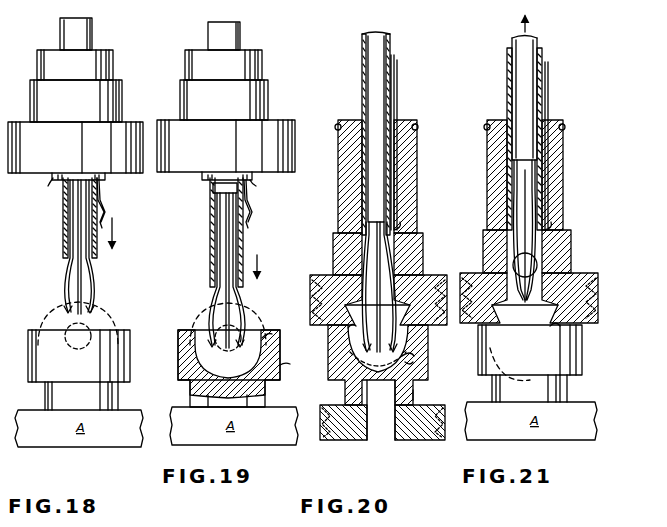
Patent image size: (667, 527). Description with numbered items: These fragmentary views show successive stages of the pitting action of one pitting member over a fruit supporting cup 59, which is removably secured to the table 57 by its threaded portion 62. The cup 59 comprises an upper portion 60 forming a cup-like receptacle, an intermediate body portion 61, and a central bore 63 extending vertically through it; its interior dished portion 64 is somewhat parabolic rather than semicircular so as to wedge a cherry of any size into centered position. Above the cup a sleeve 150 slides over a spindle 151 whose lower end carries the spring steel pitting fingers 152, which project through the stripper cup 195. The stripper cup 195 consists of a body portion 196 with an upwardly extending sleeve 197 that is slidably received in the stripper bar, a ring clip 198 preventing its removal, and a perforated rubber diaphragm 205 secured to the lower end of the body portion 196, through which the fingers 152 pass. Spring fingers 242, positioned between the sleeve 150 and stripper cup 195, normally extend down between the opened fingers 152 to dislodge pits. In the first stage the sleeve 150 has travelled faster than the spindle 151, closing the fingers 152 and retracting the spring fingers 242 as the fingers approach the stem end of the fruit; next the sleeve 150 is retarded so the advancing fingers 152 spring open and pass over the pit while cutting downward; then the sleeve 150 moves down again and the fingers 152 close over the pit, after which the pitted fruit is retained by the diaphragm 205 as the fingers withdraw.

In FIG. 18, the table 57 is at (125, 434).
In FIG. 19, the table 57 is at (275, 432).
In FIG. 20, the table 57 is at (350, 441).
In FIG. 21, the table 57 is at (503, 427).
In FIG. 18, the fruit supporting cup 59 is at (28, 342).
In FIG. 19, the fruit supporting cup 59 is at (180, 345).
In FIG. 20, the fruit supporting cup 59 is at (330, 356).
In FIG. 21, the fruit supporting cup 59 is at (583, 362).
In FIG. 20, the upper portion 60 is at (408, 357).
In FIG. 20, the body portion 61 is at (415, 396).
In FIG. 20, the threaded portion 62 is at (398, 436).
In FIG. 20, the central bore 63 is at (376, 430).
In FIG. 20, the dished portion 64 is at (412, 365).
In FIG. 18, the sleeve 150 is at (93, 26).
In FIG. 19, the sleeve 150 is at (241, 26).
In FIG. 20, the sleeve 150 is at (361, 95).
In FIG. 21, the sleeve 150 is at (507, 60).
In FIG. 19, the spindle 151 is at (213, 190).
In FIG. 20, the spindle 151 is at (378, 116).
In FIG. 21, the spindle 151 is at (520, 90).
In FIG. 18, the pitting finger 152 is at (96, 292).
In FIG. 19, the pitting finger 152 is at (247, 303).
In FIG. 20, the pitting finger 152 is at (385, 268).
In FIG. 21, the pitting finger 152 is at (540, 257).
In FIG. 18, the stripper cup 195 is at (57, 154).
In FIG. 19, the stripper cup 195 is at (211, 154).
In FIG. 20, the stripper cup 195 is at (312, 282).
In FIG. 21, the stripper cup 195 is at (597, 302).
In FIG. 18, the body portion 196 is at (70, 110).
In FIG. 19, the body portion 196 is at (218, 110).
In FIG. 20, the body portion 196 is at (424, 270).
In FIG. 21, the body portion 196 is at (572, 268).
In FIG. 18, the sleeve portion 197 is at (73, 72).
In FIG. 19, the sleeve portion 197 is at (221, 72).
In FIG. 20, the sleeve portion 197 is at (377, 176).
In FIG. 21, the sleeve portion 197 is at (564, 170).
In FIG. 20, the ring clip 198 is at (418, 127).
In FIG. 21, the ring clip 198 is at (565, 127).
In FIG. 18, the perforated rubber diaphragm 205 is at (53, 180).
In FIG. 19, the perforated rubber diaphragm 205 is at (252, 178).
In FIG. 20, the perforated rubber diaphragm 205 is at (350, 330).
In FIG. 21, the perforated rubber diaphragm 205 is at (558, 330).
In FIG. 18, the spring finger 242 is at (104, 200).
In FIG. 19, the spring finger 242 is at (250, 203).
In FIG. 20, the spring finger 242 is at (398, 94).
In FIG. 21, the spring finger 242 is at (549, 98).